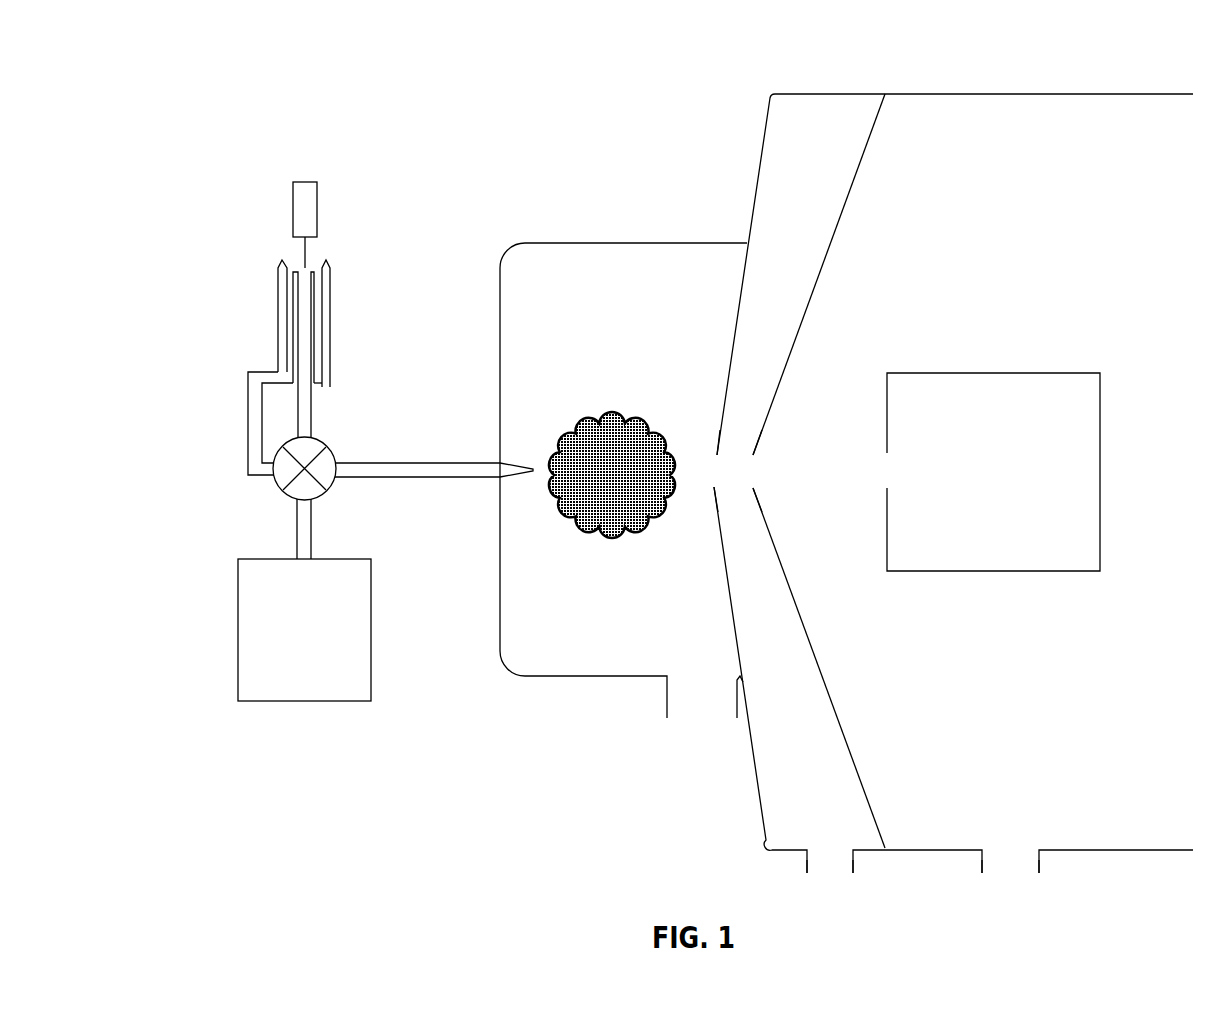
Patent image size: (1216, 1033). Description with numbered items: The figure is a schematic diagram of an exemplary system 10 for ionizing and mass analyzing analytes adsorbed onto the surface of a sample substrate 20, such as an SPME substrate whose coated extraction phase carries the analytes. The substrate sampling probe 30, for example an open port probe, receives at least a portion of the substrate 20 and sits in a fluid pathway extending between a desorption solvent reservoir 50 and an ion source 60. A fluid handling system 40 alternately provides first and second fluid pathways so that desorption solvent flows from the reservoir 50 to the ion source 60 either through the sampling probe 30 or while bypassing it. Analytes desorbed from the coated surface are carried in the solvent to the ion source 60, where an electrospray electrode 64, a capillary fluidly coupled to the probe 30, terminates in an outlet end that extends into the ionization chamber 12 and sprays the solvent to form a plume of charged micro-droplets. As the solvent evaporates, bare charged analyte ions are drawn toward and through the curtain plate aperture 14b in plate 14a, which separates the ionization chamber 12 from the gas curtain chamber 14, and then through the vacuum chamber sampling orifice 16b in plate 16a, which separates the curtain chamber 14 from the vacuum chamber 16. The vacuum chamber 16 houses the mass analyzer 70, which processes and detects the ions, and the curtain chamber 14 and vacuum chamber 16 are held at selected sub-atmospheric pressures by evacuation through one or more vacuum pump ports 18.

The system 10 is at (337, 123).
The ionization chamber 12 is at (567, 294).
The gas curtain chamber 14 is at (828, 142).
The plate 14a is at (728, 370).
The curtain plate aperture 14b is at (704, 473).
The vacuum chamber 16 is at (933, 142).
The plate 16a is at (835, 228).
The vacuum chamber sampling orifice 16b is at (782, 470).
The vacuum pump ports 18 is at (992, 882).
The sample substrate 20 is at (317, 187).
The substrate sampling probe 30 is at (258, 305).
The fluid handling system 40 is at (225, 481).
The reservoir 50 is at (304, 630).
The ion source 60 is at (474, 482).
The electrospray electrode 64 is at (520, 460).
The mass analyzer 70 is at (993, 472).